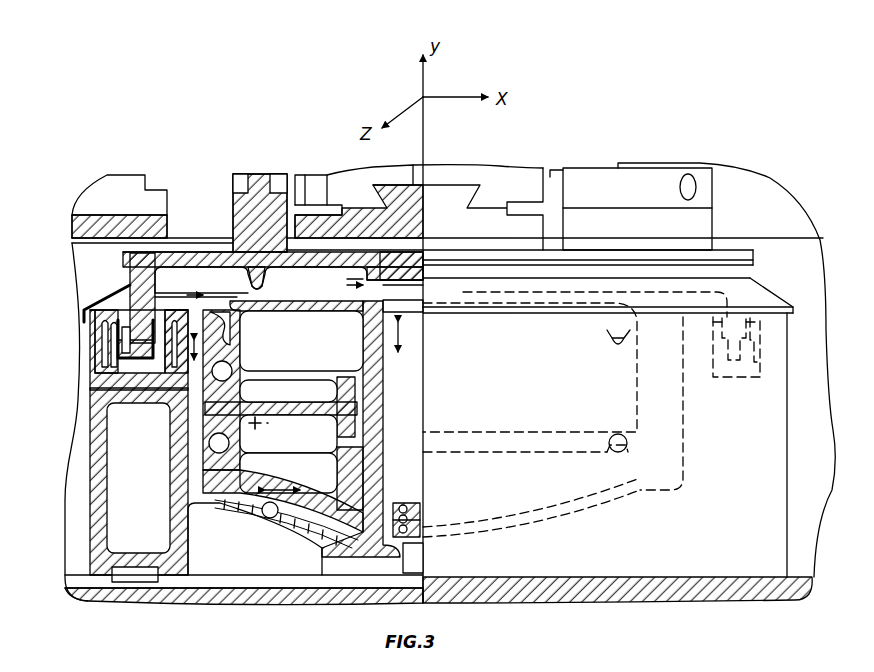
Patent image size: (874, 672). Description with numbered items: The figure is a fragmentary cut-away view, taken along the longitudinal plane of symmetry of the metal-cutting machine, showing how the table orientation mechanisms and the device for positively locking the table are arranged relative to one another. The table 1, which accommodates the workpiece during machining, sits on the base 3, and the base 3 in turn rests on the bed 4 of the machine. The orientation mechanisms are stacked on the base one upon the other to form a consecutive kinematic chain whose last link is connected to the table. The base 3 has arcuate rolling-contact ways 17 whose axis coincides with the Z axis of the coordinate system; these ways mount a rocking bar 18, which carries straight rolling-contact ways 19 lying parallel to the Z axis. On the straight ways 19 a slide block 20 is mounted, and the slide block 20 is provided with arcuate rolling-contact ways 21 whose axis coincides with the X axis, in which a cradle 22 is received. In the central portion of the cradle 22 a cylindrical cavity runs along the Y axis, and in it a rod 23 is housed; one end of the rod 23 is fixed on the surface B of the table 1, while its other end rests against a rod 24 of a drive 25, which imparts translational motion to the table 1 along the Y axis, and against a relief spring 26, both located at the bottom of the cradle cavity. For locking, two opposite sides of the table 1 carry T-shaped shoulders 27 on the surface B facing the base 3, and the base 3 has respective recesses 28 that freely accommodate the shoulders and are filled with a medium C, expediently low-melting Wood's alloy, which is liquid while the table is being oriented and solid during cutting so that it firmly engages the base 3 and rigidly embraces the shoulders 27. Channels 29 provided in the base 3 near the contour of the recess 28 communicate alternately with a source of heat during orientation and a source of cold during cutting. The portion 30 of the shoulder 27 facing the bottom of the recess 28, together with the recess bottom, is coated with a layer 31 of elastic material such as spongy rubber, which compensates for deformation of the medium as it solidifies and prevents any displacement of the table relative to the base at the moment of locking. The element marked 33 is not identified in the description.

The table 1 is at (165, 262).
The base 3 is at (97, 505).
The bed 4 is at (797, 587).
The arcuate rolling-contact ways 17 is at (273, 517).
The rocking bar 18 is at (175, 478).
The straight rolling-contact ways 19 is at (200, 442).
The slide block 20 is at (203, 413).
The arcuate rolling-contact ways 21 is at (240, 358).
The cradle 22 is at (240, 330).
The rod 23 is at (403, 410).
The rod of the drive 24 is at (420, 510).
The drive 25 is at (410, 563).
The relief spring 26 is at (410, 522).
The T-shaped shoulders 27 is at (757, 330).
The recesses 28 is at (757, 360).
The channels 29 is at (107, 358).
The portion of the shoulder 30 is at (127, 367).
The layer of elastic material 31 is at (93, 400).
The seal carrier 33 is at (123, 318).
The surface of the table B is at (150, 337).
The medium C is at (118, 322).